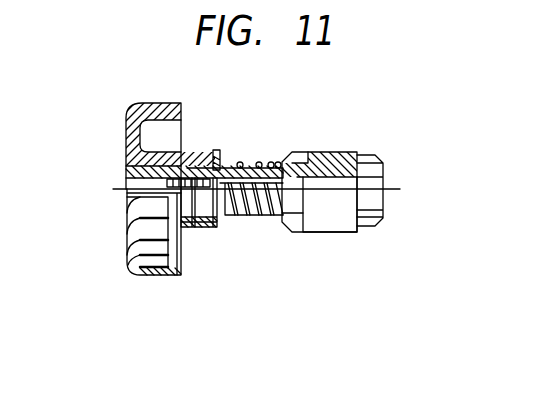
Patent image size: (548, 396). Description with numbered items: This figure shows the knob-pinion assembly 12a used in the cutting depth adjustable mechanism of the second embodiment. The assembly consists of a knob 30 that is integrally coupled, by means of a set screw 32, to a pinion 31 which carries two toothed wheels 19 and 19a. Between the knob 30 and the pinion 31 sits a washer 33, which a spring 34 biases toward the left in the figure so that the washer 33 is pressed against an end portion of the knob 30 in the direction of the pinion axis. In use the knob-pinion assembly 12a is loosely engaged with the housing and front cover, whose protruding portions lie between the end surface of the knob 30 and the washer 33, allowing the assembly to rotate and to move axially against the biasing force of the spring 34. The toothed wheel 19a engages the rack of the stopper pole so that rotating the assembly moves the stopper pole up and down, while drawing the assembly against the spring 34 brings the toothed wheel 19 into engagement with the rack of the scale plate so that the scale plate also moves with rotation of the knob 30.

The knob-pinion assembly 12a is at (279, 298).
The knob 30 is at (132, 105).
The set screw 32 is at (130, 177).
The washer 33 is at (215, 148).
The spring 34 is at (240, 162).
The toothed wheel 19 is at (293, 150).
The toothed wheel 19a is at (373, 153).
The pinion 31 is at (333, 218).